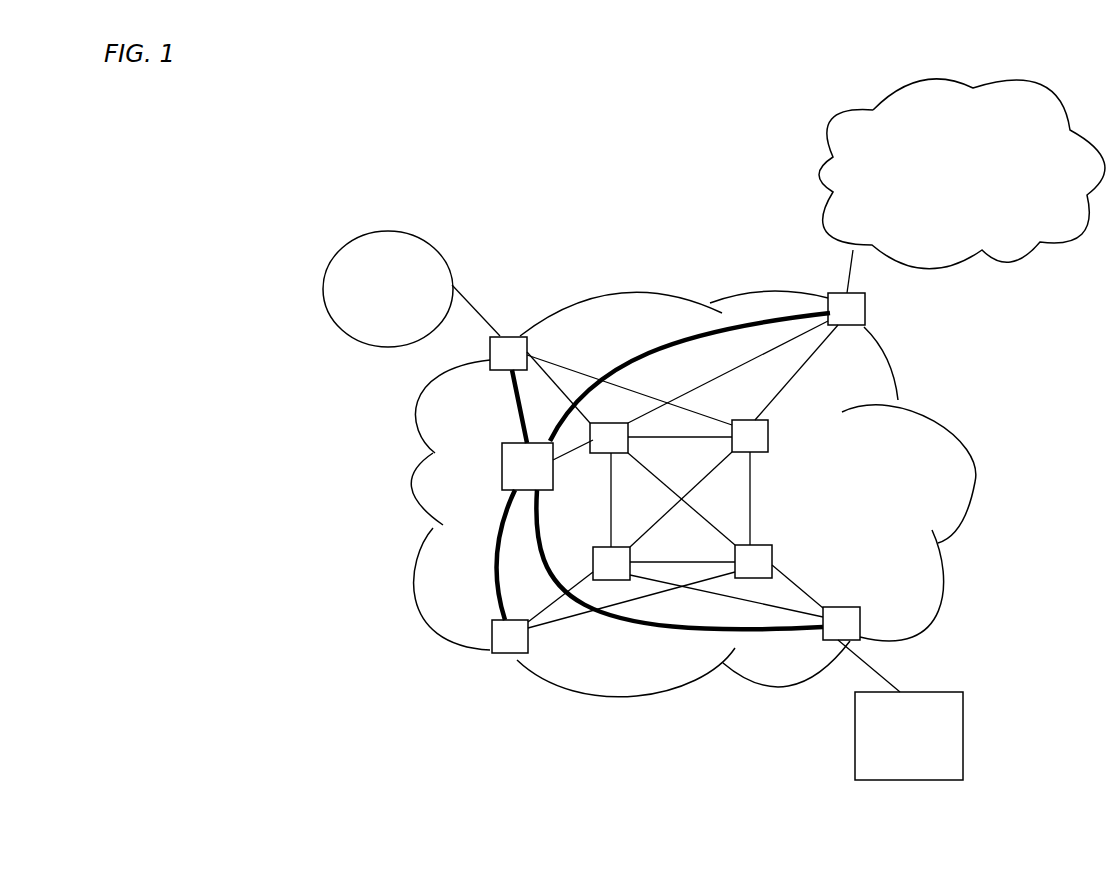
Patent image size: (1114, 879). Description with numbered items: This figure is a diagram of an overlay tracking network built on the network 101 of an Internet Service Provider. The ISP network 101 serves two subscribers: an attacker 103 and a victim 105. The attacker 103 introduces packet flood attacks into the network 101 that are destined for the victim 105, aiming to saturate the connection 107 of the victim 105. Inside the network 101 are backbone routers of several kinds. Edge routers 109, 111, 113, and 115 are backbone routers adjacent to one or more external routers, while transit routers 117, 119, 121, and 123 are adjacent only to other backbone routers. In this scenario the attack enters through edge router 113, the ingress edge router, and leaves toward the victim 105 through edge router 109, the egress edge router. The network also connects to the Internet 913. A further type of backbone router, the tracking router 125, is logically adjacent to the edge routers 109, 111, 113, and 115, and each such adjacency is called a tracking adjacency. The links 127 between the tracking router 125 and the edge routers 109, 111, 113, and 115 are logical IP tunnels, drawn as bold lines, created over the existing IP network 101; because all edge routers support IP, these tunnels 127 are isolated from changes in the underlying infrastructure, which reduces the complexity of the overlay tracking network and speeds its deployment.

The ISP network 101 is at (975, 481).
The attacker 103 is at (344, 333).
The victim 105 is at (855, 737).
The connection 107 is at (897, 687).
The edge router 109 is at (860, 620).
The edge router 111 is at (492, 633).
The edge router 113 is at (527, 346).
The edge router 115 is at (865, 315).
The transit router 117 is at (772, 553).
The transit router 119 is at (630, 557).
The transit router 121 is at (628, 438).
The transit router 123 is at (768, 440).
The tracking router 125 is at (502, 467).
The links 127 is at (714, 338).
The Internet 913 is at (962, 186).